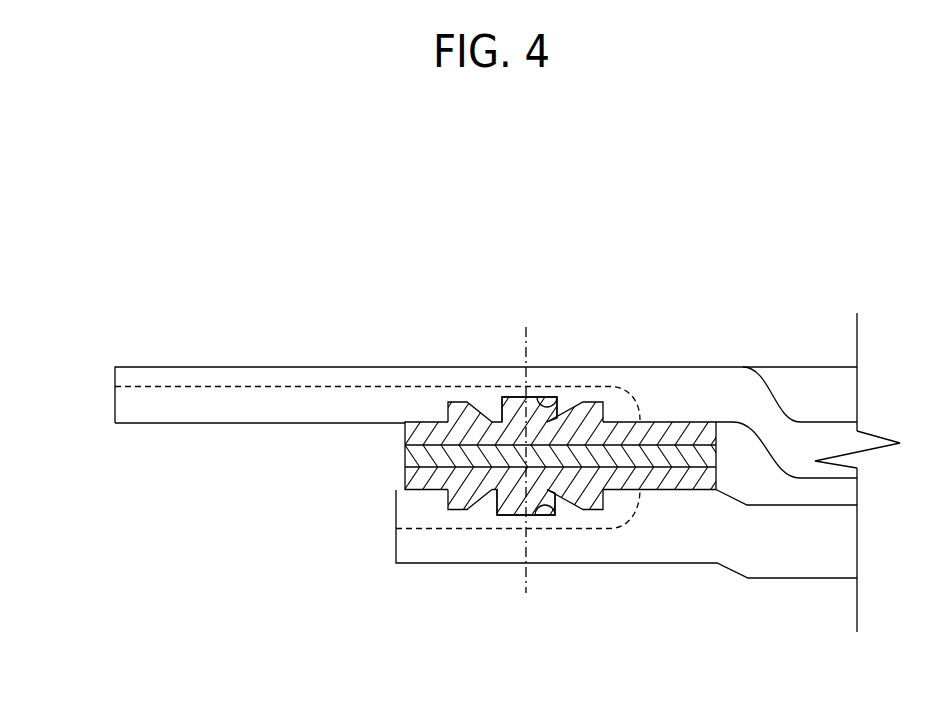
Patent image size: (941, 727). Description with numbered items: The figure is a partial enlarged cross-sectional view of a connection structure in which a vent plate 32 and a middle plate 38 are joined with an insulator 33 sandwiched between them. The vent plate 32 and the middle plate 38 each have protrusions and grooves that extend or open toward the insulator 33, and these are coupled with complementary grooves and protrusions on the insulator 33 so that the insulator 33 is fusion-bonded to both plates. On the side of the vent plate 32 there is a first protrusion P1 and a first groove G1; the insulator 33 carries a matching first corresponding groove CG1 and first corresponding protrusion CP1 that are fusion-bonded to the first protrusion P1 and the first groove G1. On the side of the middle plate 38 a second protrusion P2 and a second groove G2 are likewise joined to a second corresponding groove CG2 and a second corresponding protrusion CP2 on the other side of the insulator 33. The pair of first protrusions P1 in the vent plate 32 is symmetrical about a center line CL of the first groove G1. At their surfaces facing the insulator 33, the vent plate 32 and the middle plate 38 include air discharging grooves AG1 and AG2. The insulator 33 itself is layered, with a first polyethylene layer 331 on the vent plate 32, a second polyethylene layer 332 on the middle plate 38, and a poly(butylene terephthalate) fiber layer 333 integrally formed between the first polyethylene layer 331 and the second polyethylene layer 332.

The vent plate 32 is at (96, 408).
The insulator 33 is at (384, 457).
The middle plate 38 is at (375, 546).
The first polyethylene layer 331 is at (687, 432).
The second polyethylene layer 332 is at (688, 480).
The poly(butylene terephthalate) fiber layer 333 is at (720, 454).
The air discharging groove AG1 is at (193, 407).
The air discharging groove AG2 is at (422, 512).
The first corresponding groove CG1 is at (490, 418).
The second corresponding groove CG2 is at (493, 492).
The first corresponding protrusion CP1 is at (510, 407).
The second corresponding protrusion CP2 is at (510, 505).
The first groove G1 is at (562, 410).
The second groove G2 is at (562, 500).
The first protrusion P1 is at (560, 412).
The second protrusion P2 is at (562, 500).
The center line CL is at (528, 340).